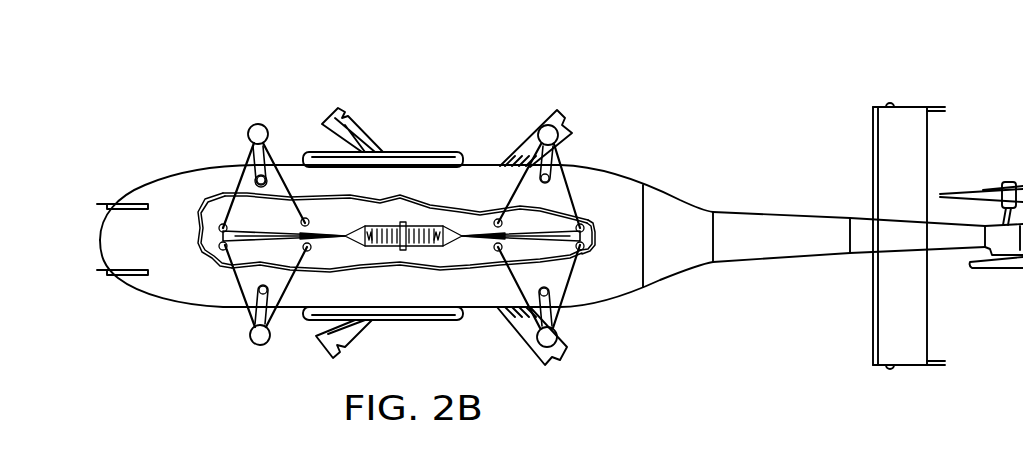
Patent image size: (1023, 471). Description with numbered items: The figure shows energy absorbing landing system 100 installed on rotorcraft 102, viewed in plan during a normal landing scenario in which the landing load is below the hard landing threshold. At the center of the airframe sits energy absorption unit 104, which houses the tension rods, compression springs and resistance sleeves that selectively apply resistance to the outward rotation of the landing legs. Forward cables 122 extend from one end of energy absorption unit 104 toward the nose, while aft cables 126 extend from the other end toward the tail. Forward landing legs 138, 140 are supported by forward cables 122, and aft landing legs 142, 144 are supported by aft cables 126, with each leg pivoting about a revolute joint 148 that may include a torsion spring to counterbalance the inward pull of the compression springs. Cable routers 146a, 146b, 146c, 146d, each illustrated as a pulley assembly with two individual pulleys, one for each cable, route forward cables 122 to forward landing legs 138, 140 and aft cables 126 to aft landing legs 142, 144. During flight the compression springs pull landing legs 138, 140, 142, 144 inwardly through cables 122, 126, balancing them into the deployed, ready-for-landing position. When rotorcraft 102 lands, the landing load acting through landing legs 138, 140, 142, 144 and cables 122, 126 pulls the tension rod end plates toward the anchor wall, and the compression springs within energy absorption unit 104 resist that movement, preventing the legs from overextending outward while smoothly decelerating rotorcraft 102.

The energy absorbing landing system 100 is at (188, 203).
The rotorcraft 102 is at (149, 112).
The energy absorption unit 104 is at (395, 212).
The forward cables 122 is at (322, 252).
The aft cables 126 is at (474, 252).
The forward landing leg 138 is at (256, 134).
The forward landing leg 140 is at (258, 336).
The aft landing leg 142 is at (550, 134).
The aft landing leg 144 is at (549, 337).
The cable router 146a is at (200, 237).
The cable router 146b is at (303, 218).
The cable router 146c is at (497, 219).
The cable router 146d is at (584, 250).
The revolute joint 148 is at (254, 177).